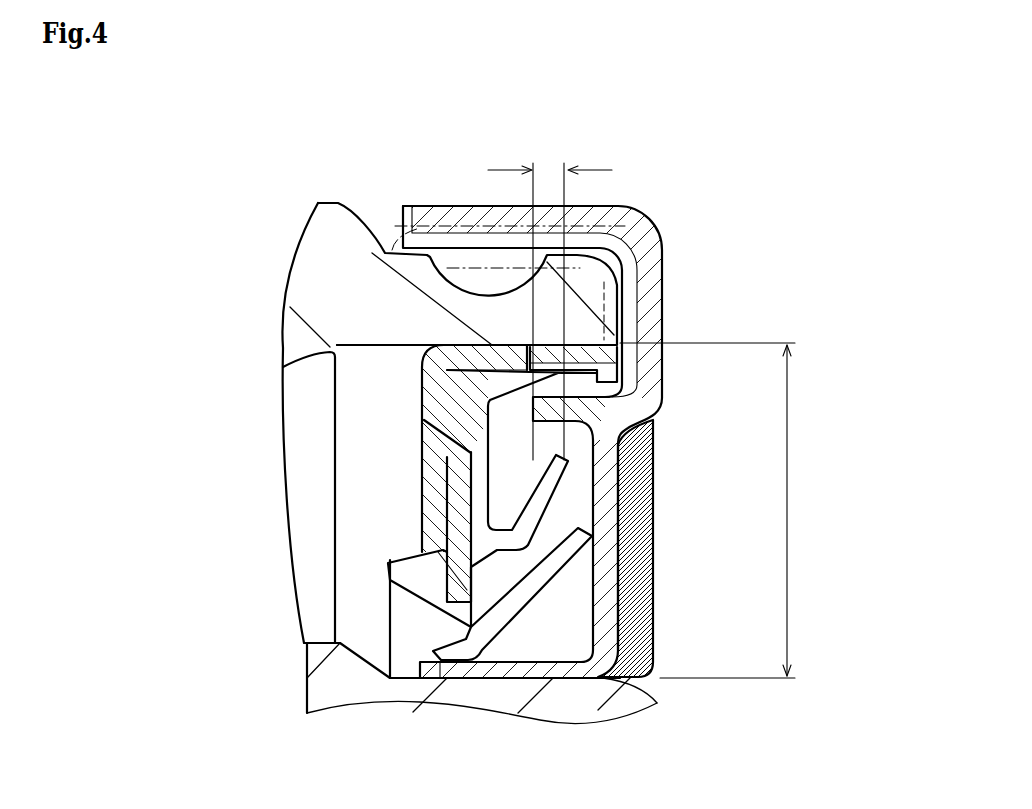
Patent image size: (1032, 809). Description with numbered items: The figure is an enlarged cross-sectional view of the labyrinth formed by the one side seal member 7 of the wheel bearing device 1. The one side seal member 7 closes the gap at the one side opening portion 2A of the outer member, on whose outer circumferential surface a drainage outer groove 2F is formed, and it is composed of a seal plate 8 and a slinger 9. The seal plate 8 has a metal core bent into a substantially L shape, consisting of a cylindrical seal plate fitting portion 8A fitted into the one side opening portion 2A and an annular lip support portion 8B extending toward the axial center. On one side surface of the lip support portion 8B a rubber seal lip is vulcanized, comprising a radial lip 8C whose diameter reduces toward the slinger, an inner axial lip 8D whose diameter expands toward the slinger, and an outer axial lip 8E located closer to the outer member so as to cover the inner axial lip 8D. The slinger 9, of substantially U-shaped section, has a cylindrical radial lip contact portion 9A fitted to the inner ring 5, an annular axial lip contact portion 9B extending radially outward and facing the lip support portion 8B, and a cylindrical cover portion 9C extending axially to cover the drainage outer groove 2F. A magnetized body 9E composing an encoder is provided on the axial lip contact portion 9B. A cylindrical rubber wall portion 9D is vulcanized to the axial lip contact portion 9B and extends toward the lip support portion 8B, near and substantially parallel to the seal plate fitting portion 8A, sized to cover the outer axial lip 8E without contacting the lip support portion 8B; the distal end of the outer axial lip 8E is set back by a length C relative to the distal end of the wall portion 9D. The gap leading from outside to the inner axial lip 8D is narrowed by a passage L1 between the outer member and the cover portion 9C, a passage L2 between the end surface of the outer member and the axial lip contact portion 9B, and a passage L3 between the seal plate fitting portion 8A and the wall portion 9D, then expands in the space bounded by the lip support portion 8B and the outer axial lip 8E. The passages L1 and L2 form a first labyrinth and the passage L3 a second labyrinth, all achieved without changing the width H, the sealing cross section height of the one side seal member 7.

The wheel bearing device 1 is at (108, 136).
The one side seal member 7 is at (729, 172).
The one side opening portion 2A is at (348, 356).
The drainage outer groove 2F is at (460, 272).
The inner ring 5 is at (640, 703).
The slinger 9 is at (578, 459).
The radial lip contact portion 9A is at (452, 665).
The axial lip contact portion 9B is at (651, 322).
The cover portion 9C is at (447, 215).
The wall portion 9D is at (540, 408).
The magnetized body 9E is at (652, 597).
The seal plate 8 is at (526, 502).
The seal plate fitting portion 8A is at (613, 372).
The lip support portion 8B is at (455, 495).
The radial lip 8C is at (430, 648).
The inner axial lip 8D is at (612, 532).
The outer axial lip 8E is at (610, 466).
The length C is at (550, 300).
The width H is at (715, 510).
The passage L1 is at (634, 214).
The passage L2 is at (657, 289).
The passage L3 is at (526, 393).